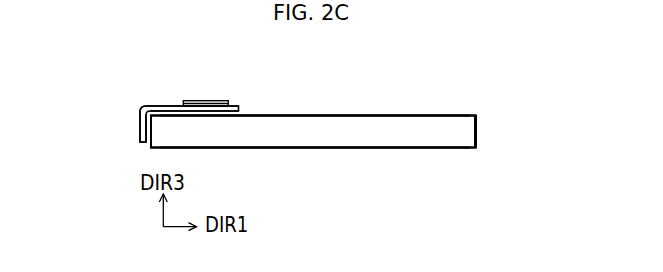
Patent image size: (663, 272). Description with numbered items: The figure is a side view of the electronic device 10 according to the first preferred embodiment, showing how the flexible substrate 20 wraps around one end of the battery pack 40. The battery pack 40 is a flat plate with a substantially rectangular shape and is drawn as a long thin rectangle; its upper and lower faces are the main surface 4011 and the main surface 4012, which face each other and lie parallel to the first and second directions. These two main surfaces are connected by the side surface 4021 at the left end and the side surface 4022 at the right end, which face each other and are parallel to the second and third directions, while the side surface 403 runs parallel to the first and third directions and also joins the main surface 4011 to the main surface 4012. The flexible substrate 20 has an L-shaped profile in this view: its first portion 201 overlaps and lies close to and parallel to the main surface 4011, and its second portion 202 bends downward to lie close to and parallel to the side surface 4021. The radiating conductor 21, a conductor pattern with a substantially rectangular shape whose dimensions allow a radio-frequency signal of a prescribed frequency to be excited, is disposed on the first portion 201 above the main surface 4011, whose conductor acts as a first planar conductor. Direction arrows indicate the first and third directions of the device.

The electronic device 10 is at (478, 50).
The flexible substrate 20 is at (77, 68).
The first portion 201 is at (167, 108).
The second portion 202 is at (143, 128).
The radiating conductor 21 is at (205, 100).
The battery pack 40 is at (294, 137).
The main surface 4011 is at (412, 114).
The main surface 4012 is at (412, 148).
The side surface 4021 is at (149, 147).
The side surface 4022 is at (480, 132).
The side surface 403 is at (452, 134).